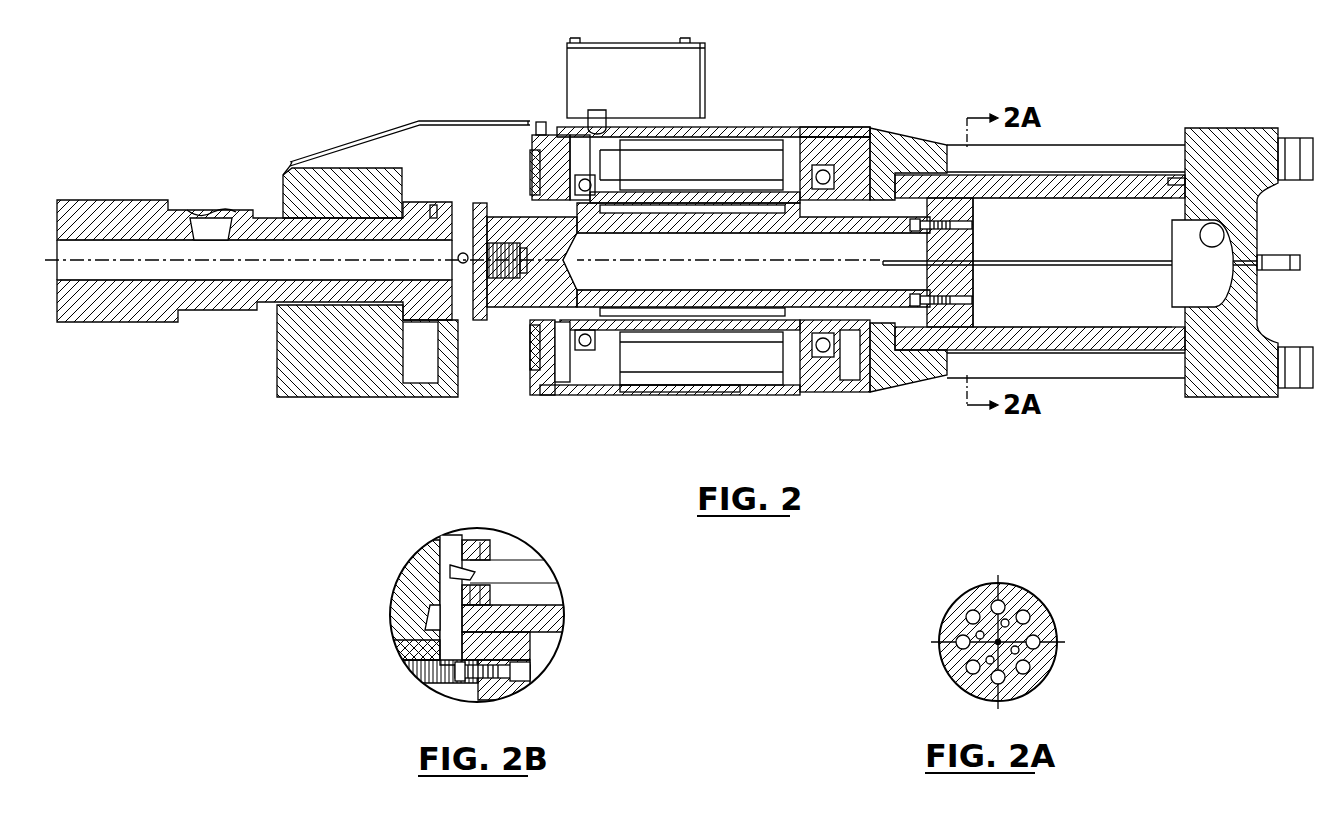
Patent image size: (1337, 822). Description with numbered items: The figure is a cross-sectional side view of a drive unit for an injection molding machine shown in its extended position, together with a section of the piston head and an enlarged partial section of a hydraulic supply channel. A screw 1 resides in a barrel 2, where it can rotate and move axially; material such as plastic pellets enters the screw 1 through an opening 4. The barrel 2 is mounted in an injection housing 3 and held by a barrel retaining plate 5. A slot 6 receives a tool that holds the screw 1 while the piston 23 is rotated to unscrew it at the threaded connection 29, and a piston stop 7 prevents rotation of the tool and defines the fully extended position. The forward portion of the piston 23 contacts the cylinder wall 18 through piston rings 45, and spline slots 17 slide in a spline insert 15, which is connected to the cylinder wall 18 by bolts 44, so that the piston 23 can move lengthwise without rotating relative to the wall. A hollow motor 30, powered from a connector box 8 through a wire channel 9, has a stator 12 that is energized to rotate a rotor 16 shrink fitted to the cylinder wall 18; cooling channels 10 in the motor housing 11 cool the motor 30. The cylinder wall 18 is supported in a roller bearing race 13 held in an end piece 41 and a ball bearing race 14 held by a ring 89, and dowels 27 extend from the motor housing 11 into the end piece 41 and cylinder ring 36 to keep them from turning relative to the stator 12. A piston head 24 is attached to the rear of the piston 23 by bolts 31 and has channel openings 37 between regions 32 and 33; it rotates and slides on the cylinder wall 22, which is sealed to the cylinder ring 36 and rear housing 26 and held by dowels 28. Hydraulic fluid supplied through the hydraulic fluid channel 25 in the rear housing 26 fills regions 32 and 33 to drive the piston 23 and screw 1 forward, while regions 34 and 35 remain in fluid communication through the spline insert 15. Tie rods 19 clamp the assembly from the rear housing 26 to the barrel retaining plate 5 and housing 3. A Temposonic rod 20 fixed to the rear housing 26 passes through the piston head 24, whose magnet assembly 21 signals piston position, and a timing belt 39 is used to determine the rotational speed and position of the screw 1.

In FIG. 2, the screw 1 is at (130, 268).
In FIG. 2, the barrel 2 is at (222, 300).
In FIG. 2, the injection housing 3 is at (285, 380).
In FIG. 2, the opening 4 is at (210, 225).
In FIG. 2, the barrel retaining plate 5 is at (320, 185).
In FIG. 2, the slot 6 is at (462, 255).
In FIG. 2, the piston stop 7 is at (480, 210).
In FIG. 2, the connector box 8 is at (650, 62).
In FIG. 2, the wire channel 9 is at (597, 125).
In FIG. 2, the cooling channels 10 is at (706, 128).
In FIG. 2, the motor housing 11 is at (772, 136).
In FIG. 2, the stator 12 is at (742, 148).
In FIG. 2, the roller bearing race 13 is at (570, 370).
In FIG. 2, the ball bearing race 14 is at (830, 355).
In FIG. 2, the spline insert 15 is at (872, 228).
In FIG. 2B, the spline insert 15 is at (405, 652).
In FIG. 2, the rotor 16 is at (800, 155).
In FIG. 2, the spline slots 17 is at (665, 335).
In FIG. 2, the cylinder wall 18 is at (660, 395).
In FIG. 2, the tie rods 19 is at (1068, 150).
In FIG. 2, the Temposonic rod 20 is at (1062, 262).
In FIG. 2A, the Temposonic rod 20 is at (965, 648).
In FIG. 2, the magnet assembly 21 is at (925, 268).
In FIG. 2, the cylinder wall 22 is at (1122, 352).
In FIG. 2B, the cylinder wall 22 is at (555, 620).
In FIG. 2, the piston 23 is at (710, 330).
In FIG. 2B, the piston 23 is at (418, 670).
In FIG. 2, the piston head 24 is at (972, 248).
In FIG. 2B, the piston head 24 is at (525, 645).
In FIG. 2A, the piston head 24 is at (1050, 658).
In FIG. 2, the hydraulic fluid channel 25 is at (1215, 238).
In FIG. 2, the rear housing 26 is at (1238, 325).
In FIG. 2, the dowels 27 is at (555, 395).
In FIG. 2, the dowels 28 is at (1180, 180).
In FIG. 2, the threaded connection 29 is at (510, 278).
In FIG. 2, the hollow motor 30 is at (722, 118).
In FIG. 2, the bolts 31 is at (972, 225).
In FIG. 2B, the bolts 31 is at (525, 670).
In FIG. 2A, the bolts 31 is at (1050, 622).
In FIG. 2, the region 32 is at (1071, 306).
In FIG. 2, the region 33 is at (788, 259).
In FIG. 2, the region 34 is at (716, 222).
In FIG. 2, the region 35 is at (920, 170).
In FIG. 2B, the region 35 is at (435, 628).
In FIG. 2, the cylinder ring 36 is at (915, 392).
In FIG. 2B, the cylinder ring 36 is at (412, 562).
In FIG. 2A, the channel openings 37 is at (972, 625).
In FIG. 2, the timing belt 39 is at (538, 360).
In FIG. 2, the end piece 41 is at (537, 128).
In FIG. 2, the bolts 44 is at (830, 172).
In FIG. 2, the piston rings 45 is at (600, 300).
In FIG. 2, the ring 89 is at (850, 130).